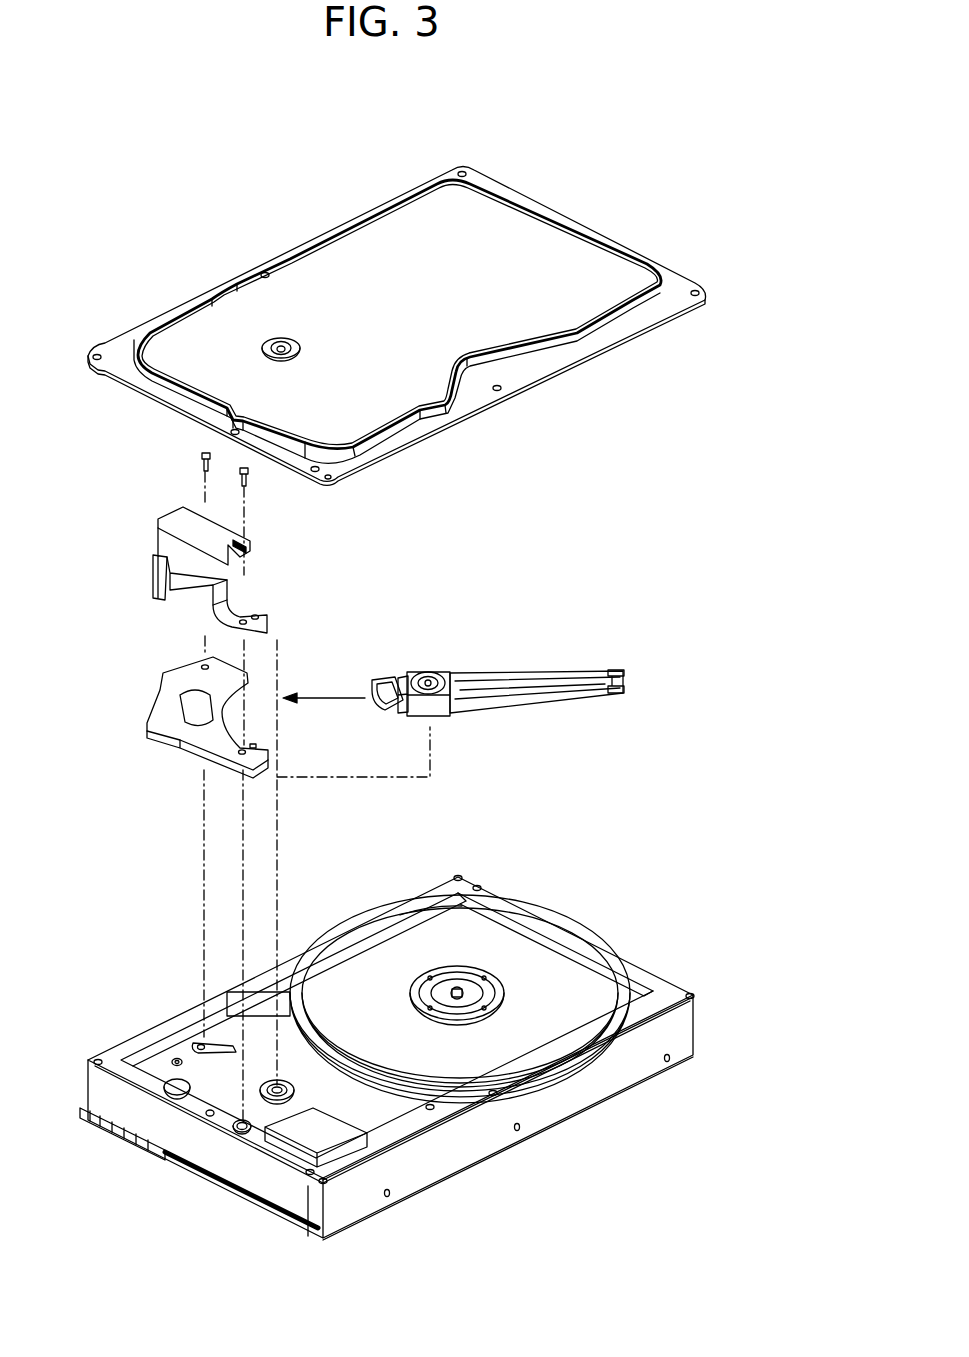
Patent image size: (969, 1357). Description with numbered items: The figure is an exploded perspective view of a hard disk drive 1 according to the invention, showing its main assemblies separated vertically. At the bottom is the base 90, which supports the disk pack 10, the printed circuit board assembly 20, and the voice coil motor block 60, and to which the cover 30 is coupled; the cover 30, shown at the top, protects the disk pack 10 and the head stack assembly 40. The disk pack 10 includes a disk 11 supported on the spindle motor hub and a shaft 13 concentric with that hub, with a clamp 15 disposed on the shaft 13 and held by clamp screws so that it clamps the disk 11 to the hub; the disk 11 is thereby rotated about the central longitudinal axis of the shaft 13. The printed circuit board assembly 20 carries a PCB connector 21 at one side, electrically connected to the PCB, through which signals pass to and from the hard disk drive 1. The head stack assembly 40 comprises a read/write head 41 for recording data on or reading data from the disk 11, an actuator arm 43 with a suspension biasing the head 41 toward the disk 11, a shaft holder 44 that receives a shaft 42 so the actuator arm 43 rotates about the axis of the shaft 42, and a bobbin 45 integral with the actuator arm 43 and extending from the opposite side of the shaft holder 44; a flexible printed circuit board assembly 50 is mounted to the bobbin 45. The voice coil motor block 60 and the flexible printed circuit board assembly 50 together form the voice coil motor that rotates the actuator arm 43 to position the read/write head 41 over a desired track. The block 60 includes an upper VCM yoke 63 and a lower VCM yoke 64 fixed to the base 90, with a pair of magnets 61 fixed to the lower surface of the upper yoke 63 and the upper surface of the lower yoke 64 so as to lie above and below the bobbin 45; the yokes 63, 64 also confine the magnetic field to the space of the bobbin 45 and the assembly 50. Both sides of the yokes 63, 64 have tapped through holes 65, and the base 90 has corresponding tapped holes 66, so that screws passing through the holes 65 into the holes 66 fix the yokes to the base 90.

The hard disk drive 1 is at (118, 154).
The disk pack 10 is at (510, 972).
The disk 11 is at (460, 928).
The shaft 13 is at (462, 986).
The clamp 15 is at (508, 988).
The printed circuit board assembly 20 is at (387, 1084).
The PCB connector 21 is at (187, 1177).
The cover 30 is at (512, 230).
The head stack assembly 40 is at (488, 680).
The read/write head 41 is at (621, 672).
The shaft 42 is at (430, 676).
The actuator arm 43 is at (571, 674).
The shaft holder 44 is at (441, 718).
The bobbin 45 is at (405, 714).
The flexible printed circuit board assembly 50 is at (383, 708).
The voice coil motor block 60 is at (198, 669).
The magnets 61 is at (185, 708).
The upper VCM yoke 63 is at (175, 546).
The lower VCM yoke 64 is at (172, 678).
The tapped through holes 65 is at (246, 748).
The tapped holes 66 is at (243, 1133).
The base 90 is at (583, 1100).